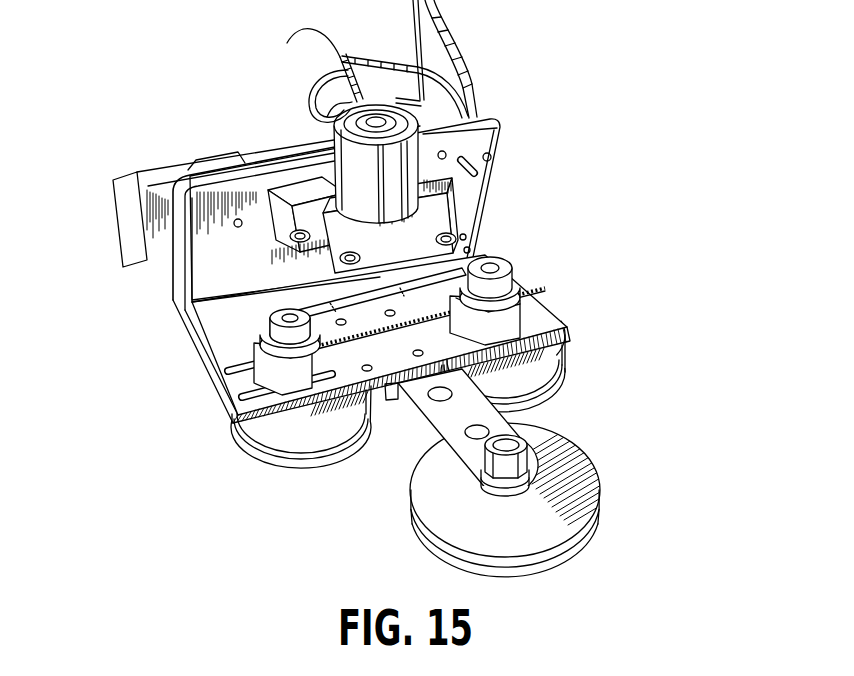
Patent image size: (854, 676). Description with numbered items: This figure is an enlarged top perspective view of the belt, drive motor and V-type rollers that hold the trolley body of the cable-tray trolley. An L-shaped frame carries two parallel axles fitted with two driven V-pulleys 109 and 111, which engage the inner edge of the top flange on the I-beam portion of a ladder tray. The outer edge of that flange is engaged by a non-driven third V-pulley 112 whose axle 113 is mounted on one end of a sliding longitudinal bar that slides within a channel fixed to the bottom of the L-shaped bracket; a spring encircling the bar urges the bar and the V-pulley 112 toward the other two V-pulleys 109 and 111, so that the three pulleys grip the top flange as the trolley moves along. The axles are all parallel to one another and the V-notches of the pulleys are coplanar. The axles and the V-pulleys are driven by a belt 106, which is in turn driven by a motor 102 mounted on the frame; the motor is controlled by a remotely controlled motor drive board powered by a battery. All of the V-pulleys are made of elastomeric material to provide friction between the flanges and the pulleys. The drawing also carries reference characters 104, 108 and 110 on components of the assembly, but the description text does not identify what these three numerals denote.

The motor 102 is at (345, 97).
The rod 104 is at (352, 287).
The belt 106 is at (470, 252).
The left roller 108 is at (262, 327).
The V-pulley 109 is at (270, 460).
The right roller 110 is at (520, 276).
The V-pulley 111 is at (540, 363).
The V-pulley 112 is at (563, 500).
The axle 113 is at (528, 425).